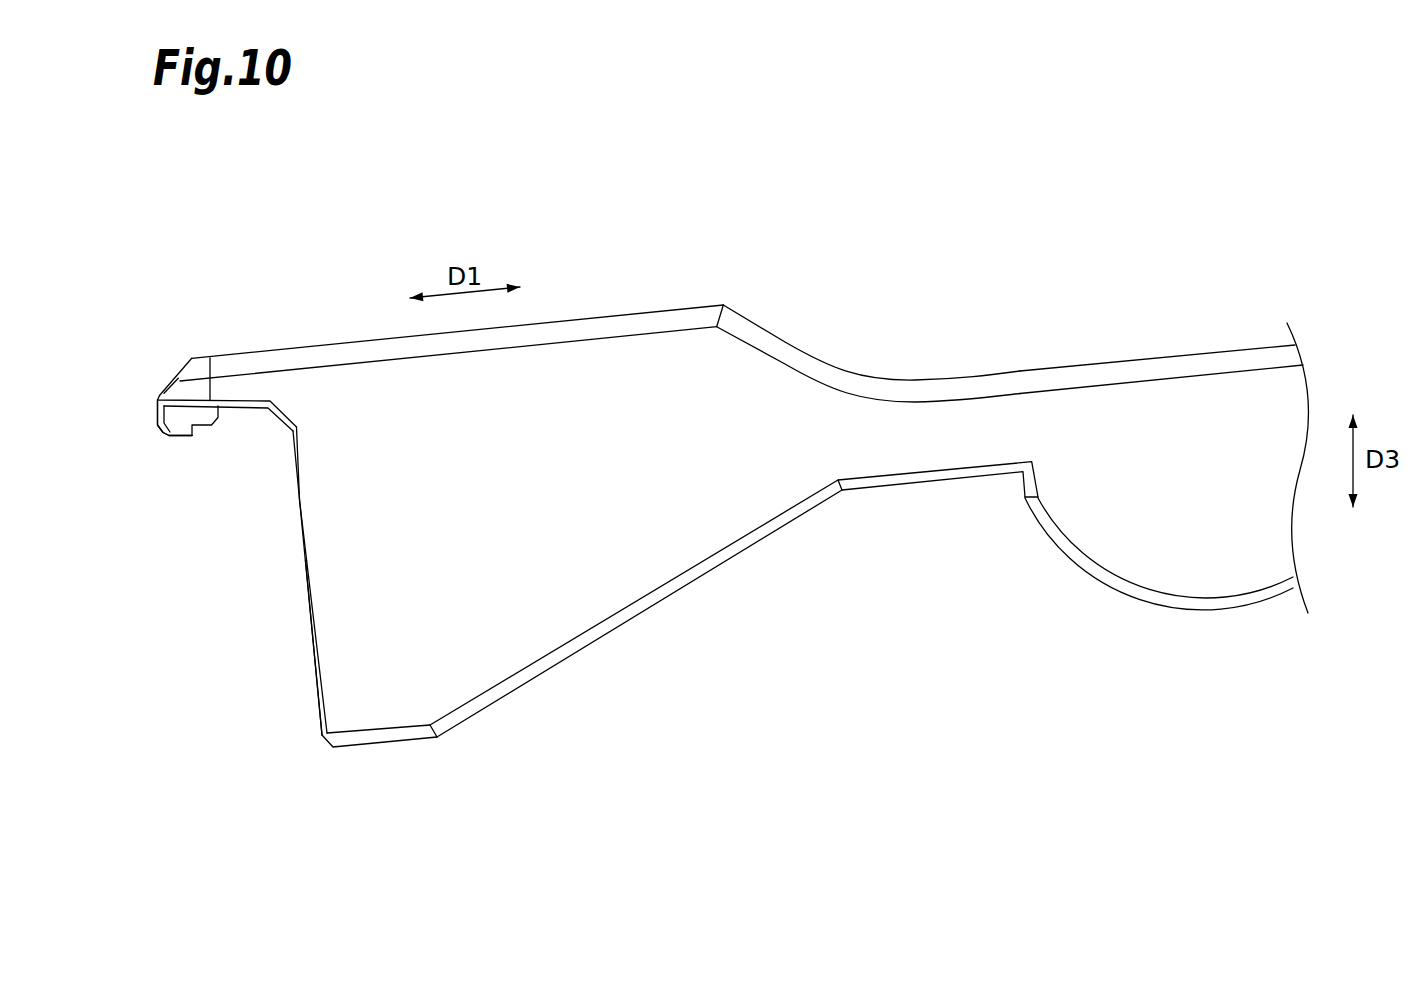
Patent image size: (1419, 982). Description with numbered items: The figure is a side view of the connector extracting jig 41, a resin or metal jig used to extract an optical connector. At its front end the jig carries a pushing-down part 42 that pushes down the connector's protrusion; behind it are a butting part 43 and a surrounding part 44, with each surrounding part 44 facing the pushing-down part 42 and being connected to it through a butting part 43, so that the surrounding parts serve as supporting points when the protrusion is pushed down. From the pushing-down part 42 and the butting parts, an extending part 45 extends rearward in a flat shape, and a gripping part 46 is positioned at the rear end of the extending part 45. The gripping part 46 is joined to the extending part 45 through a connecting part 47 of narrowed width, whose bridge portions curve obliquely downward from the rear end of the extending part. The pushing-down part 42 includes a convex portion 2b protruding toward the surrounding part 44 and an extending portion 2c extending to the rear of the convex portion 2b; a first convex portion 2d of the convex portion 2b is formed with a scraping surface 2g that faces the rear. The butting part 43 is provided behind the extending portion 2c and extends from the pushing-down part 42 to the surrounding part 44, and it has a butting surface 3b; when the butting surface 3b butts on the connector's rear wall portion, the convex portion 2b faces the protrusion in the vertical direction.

The connector extracting jig 41 is at (1092, 197).
The pushing-down part 42 is at (152, 457).
The butting part 43 is at (301, 659).
The surrounding part 44 is at (377, 743).
The extending part 45 is at (574, 317).
The gripping part 46 is at (1220, 400).
The connecting part 47 is at (957, 388).
The extending portion 2c is at (240, 386).
The scraping surface 2g is at (195, 431).
The convex portion 2b is at (180, 439).
The first convex portion 2d is at (175, 418).
The butting surface 3b is at (305, 623).